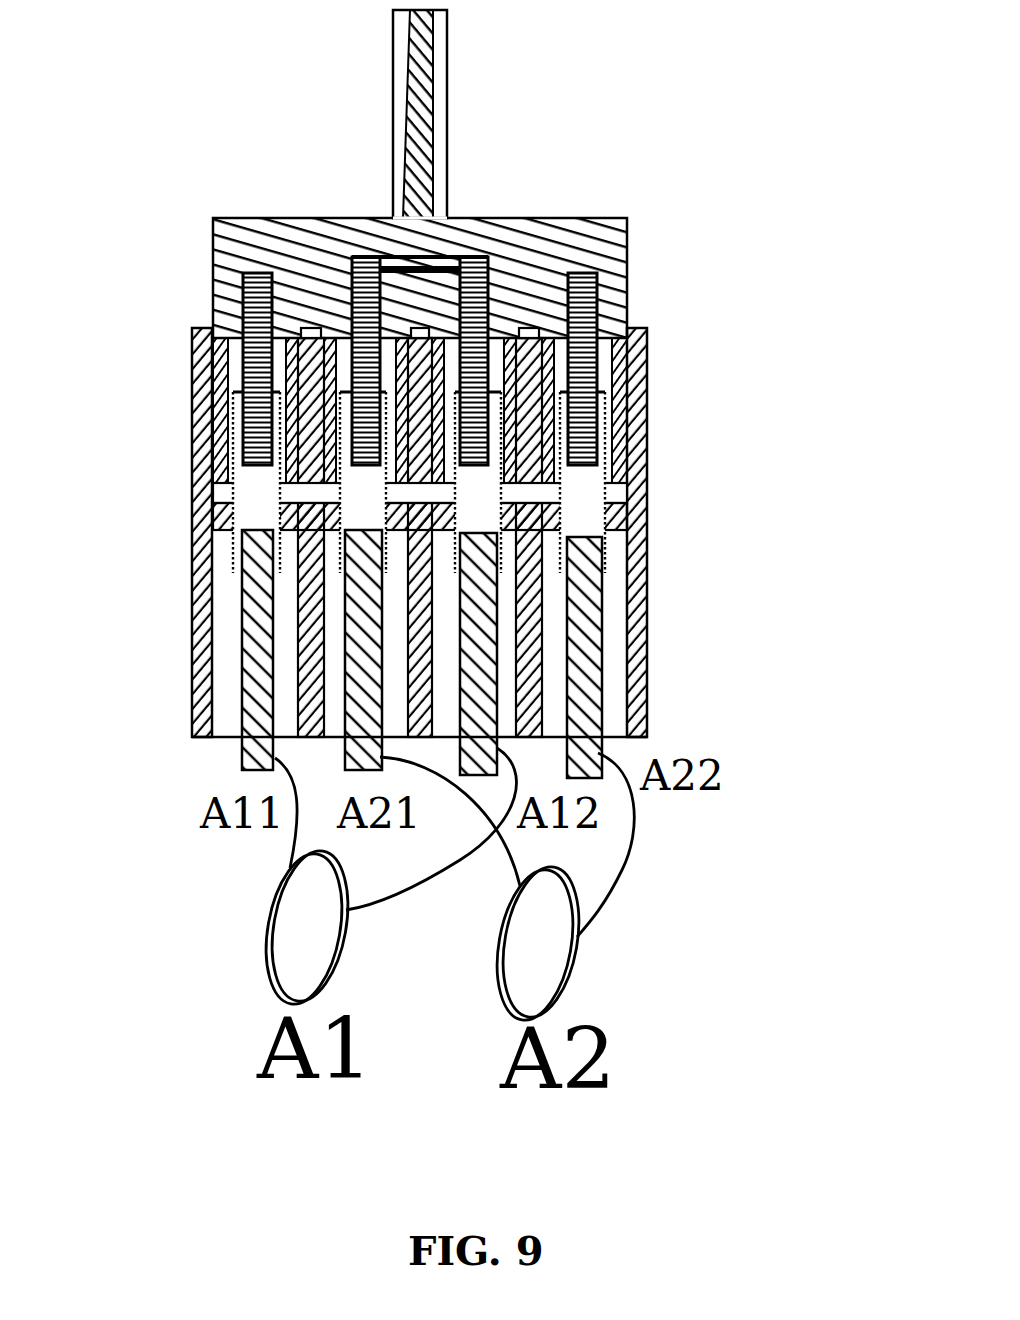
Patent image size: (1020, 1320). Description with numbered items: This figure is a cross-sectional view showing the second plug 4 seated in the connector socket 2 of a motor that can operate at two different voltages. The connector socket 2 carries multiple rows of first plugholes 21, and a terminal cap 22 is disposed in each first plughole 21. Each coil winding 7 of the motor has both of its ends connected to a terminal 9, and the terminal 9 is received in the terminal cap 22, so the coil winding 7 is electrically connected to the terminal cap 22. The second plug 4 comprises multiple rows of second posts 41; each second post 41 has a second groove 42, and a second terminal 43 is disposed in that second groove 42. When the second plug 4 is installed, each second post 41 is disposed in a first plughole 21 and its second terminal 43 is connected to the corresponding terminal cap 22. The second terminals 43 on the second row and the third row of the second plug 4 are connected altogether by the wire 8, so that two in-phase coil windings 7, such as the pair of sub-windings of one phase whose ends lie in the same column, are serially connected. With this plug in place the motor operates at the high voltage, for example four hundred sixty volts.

The connector socket 2 is at (650, 693).
The second plug 4 is at (597, 218).
The coil winding 7 is at (575, 967).
The wire 8 is at (445, 262).
The terminal 9 is at (252, 633).
The first plughole 21 is at (613, 492).
The terminal cap 22 is at (612, 548).
The second post 41 is at (640, 405).
The second groove 42 is at (608, 370).
The second terminal 43 is at (597, 302).